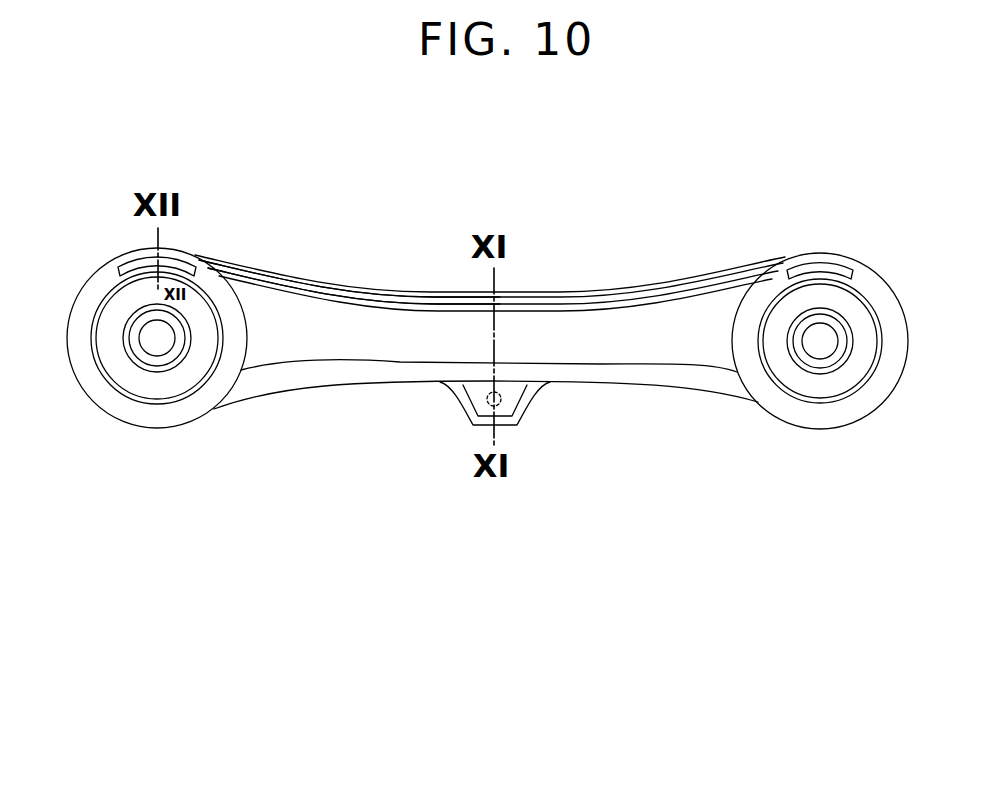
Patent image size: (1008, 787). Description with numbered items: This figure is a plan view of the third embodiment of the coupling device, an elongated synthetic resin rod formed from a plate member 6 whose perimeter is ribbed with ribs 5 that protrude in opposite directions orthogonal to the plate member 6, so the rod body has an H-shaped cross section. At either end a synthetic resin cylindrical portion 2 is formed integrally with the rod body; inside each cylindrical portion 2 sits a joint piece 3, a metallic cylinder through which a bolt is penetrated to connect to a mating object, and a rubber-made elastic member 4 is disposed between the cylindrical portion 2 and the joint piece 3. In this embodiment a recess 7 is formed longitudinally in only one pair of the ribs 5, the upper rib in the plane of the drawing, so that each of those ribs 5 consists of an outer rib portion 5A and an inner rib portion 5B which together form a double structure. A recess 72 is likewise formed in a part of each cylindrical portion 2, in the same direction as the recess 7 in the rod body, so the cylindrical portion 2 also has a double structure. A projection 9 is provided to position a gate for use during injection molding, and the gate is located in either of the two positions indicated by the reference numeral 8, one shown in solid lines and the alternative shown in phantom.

The cylindrical portion 2 is at (200, 400).
The joint piece 3 is at (140, 348).
The elastic member 4 is at (112, 323).
The rib 5 is at (537, 231).
The outer rib portion 5A is at (545, 292).
The inner rib portion 5B is at (593, 308).
The plate member 6 is at (393, 350).
The recess 7 is at (692, 298).
The gate position 8 is at (490, 428).
The projection 9 is at (456, 403).
The recess 72 is at (192, 268).